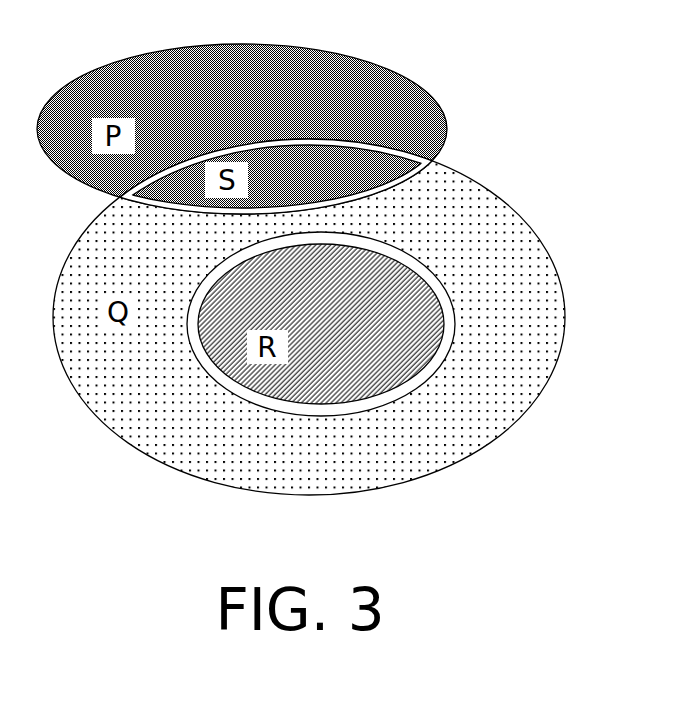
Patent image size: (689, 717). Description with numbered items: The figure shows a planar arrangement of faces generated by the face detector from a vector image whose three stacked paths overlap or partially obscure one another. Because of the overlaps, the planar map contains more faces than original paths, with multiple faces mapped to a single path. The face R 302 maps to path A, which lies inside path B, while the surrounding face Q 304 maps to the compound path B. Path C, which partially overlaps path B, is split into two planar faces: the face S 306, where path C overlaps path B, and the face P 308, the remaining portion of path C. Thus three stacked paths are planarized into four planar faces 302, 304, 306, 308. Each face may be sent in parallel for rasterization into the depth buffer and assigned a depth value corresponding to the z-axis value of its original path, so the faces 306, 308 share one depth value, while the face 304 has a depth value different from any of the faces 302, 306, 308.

The face R 302 is at (417, 287).
The face Q 304 is at (547, 252).
The face S 306 is at (388, 160).
The face P 308 is at (413, 95).